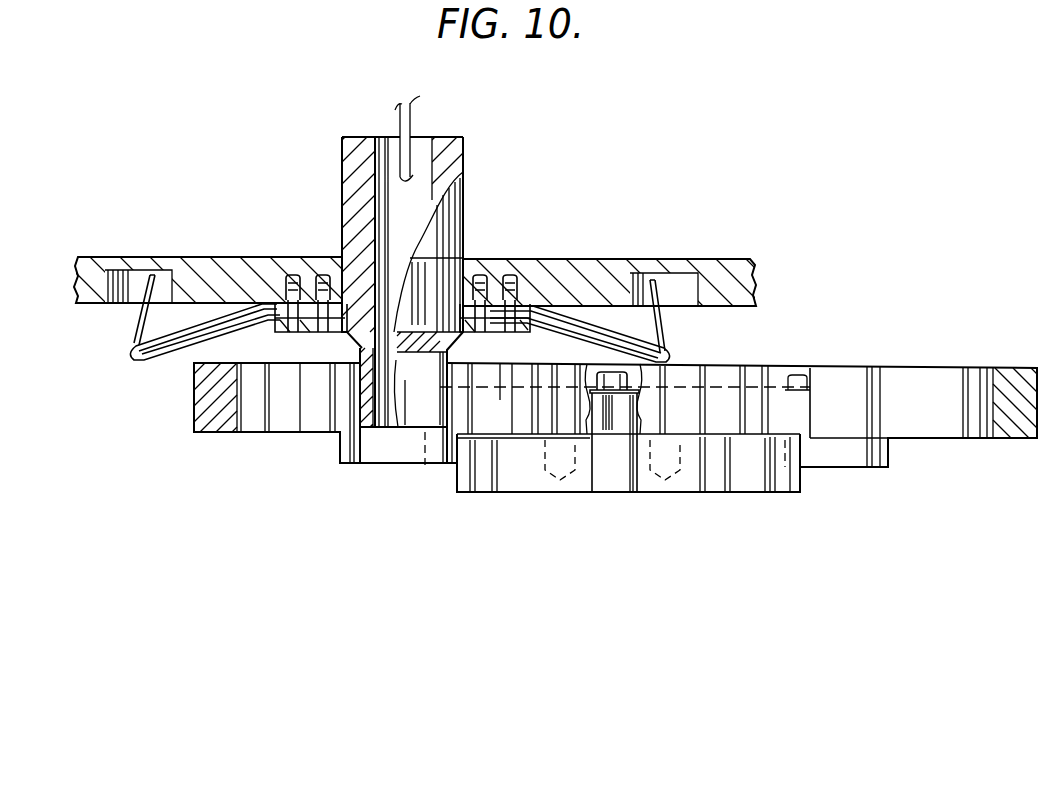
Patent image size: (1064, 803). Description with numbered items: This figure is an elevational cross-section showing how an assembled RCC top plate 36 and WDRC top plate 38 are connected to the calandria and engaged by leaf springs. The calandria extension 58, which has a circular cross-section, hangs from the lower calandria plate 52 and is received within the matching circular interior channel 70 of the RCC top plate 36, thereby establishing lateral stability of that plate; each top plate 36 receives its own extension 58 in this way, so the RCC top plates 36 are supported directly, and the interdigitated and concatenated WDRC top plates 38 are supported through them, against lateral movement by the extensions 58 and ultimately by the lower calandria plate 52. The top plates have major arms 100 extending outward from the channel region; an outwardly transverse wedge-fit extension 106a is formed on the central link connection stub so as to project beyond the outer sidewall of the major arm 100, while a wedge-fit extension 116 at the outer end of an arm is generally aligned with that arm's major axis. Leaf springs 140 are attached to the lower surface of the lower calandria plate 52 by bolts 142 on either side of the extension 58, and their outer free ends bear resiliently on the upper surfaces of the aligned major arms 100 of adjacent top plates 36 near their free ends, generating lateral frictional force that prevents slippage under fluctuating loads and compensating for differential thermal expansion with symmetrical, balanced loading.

The RCC top plate 36 is at (178, 419).
The WDRC top plate 38 is at (733, 498).
The lower calandria plate 52 is at (756, 278).
The calandria extension 58 is at (448, 208).
The interior channel 70 is at (414, 458).
The major arm 100 is at (748, 370).
The wedge-fit extension 106a is at (612, 493).
The wedge-fit extension 116 is at (1037, 375).
The leaf spring 140 is at (142, 360).
The bolt 142 is at (322, 275).